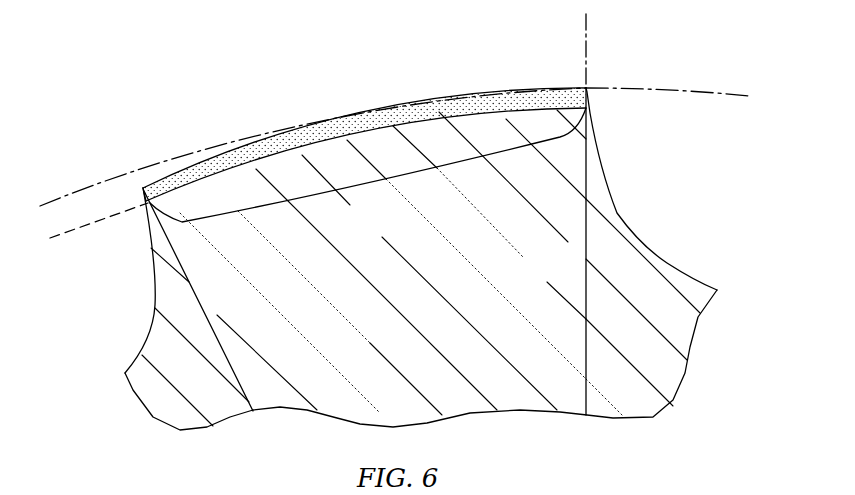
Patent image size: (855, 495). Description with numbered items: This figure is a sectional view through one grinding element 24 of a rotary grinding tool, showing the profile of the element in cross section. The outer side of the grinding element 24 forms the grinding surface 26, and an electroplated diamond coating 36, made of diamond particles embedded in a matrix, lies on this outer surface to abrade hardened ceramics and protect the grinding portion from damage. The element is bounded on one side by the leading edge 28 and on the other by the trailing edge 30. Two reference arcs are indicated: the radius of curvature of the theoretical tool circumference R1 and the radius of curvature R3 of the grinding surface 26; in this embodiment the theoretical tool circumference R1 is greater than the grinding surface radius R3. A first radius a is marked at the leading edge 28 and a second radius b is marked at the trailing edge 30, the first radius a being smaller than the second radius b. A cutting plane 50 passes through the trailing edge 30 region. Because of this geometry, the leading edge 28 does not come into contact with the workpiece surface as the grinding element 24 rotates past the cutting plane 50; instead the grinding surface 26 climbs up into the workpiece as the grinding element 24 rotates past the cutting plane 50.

The grinding element 24 is at (362, 186).
The grinding surface 26 is at (228, 158).
The leading edge 28 is at (143, 188).
The trailing edge 30 is at (588, 87).
The electroplated diamond coating 36 is at (314, 137).
The cutting plane 50 is at (585, 42).
The first radius a is at (199, 300).
The second radius b is at (586, 272).
The radius of curvature of the theoretical tool circumference R1 is at (752, 68).
The radius of curvature of the grinding surface R3 is at (731, 127).